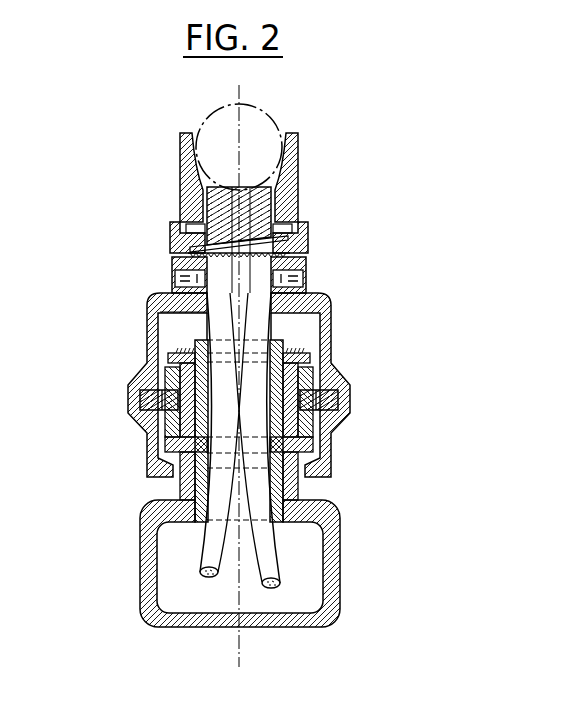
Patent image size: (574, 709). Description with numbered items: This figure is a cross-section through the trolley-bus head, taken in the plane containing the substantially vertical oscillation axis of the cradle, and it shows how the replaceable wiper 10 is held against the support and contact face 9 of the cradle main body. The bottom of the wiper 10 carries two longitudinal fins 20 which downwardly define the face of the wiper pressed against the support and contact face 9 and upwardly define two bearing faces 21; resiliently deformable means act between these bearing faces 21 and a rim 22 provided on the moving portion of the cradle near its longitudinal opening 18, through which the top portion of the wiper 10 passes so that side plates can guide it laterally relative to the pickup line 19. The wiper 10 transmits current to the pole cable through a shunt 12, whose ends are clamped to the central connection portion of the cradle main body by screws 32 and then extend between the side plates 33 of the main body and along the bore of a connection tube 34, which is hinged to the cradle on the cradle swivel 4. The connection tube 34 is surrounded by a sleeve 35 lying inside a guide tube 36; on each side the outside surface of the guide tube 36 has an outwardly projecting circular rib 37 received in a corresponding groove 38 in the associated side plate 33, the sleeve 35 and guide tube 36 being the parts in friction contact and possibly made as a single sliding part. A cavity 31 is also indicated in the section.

The cradle swivel 4 is at (315, 614).
The support and contact face 9 is at (308, 282).
The replaceable wiper 10 is at (255, 197).
The shunt 12 is at (220, 542).
The longitudinal opening 18 is at (283, 232).
The pickup line 19 is at (262, 113).
The longitudinal fins 20 is at (187, 252).
The bearing faces 21 is at (188, 226).
The rim 22 is at (305, 225).
The cavity 31 is at (172, 313).
The screws 32 is at (178, 278).
The side plates 33 is at (150, 365).
The connection tube 34 is at (333, 433).
The sleeve 35 is at (323, 380).
The guide tube 36 is at (312, 368).
The circular rib 37 is at (145, 402).
The groove 38 is at (300, 412).